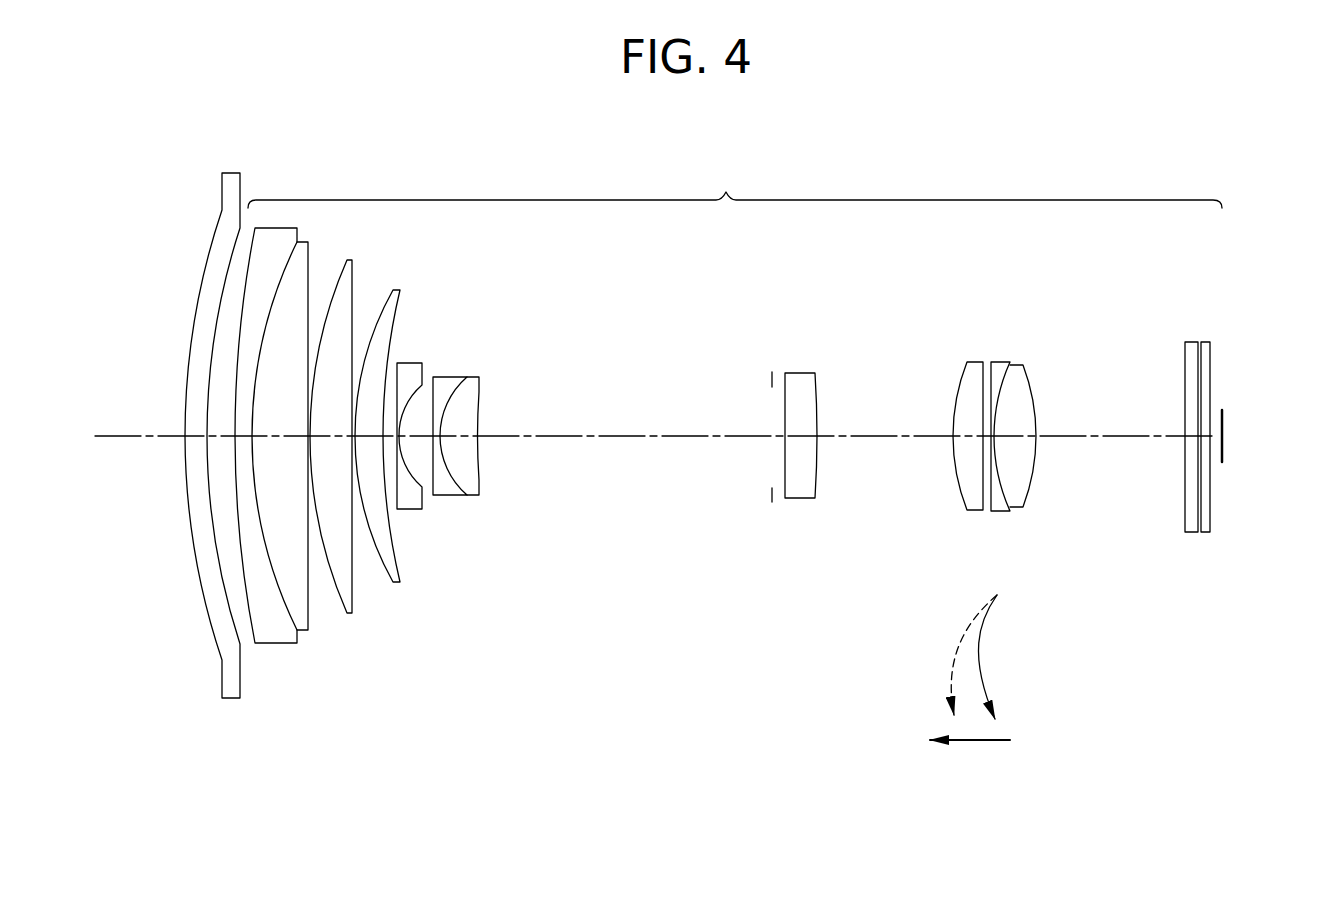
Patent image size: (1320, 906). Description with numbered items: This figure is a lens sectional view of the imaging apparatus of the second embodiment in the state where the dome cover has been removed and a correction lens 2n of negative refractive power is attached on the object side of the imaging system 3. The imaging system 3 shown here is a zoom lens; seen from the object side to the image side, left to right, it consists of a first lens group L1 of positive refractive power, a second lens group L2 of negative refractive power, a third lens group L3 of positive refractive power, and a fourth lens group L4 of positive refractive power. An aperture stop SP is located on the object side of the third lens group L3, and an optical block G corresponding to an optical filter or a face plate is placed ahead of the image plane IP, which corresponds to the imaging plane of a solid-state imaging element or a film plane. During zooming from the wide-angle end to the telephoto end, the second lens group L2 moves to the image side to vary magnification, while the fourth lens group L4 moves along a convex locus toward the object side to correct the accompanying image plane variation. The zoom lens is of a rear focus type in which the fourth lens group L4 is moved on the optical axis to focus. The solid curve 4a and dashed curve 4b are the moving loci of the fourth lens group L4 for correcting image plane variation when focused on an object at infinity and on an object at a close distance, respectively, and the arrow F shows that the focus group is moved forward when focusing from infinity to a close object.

The correction lens 2n is at (232, 685).
The imaging system 3 is at (735, 184).
The first lens group L1 is at (415, 653).
The second lens group L2 is at (591, 675).
The third lens group L3 is at (797, 665).
The fourth lens group L4 is at (957, 516).
The aperture stop SP is at (772, 379).
The image plane IP is at (1222, 425).
The optical block G is at (1178, 537).
The solid curve 4a is at (996, 657).
The dashed curve 4b is at (949, 655).
The arrow F is at (970, 760).